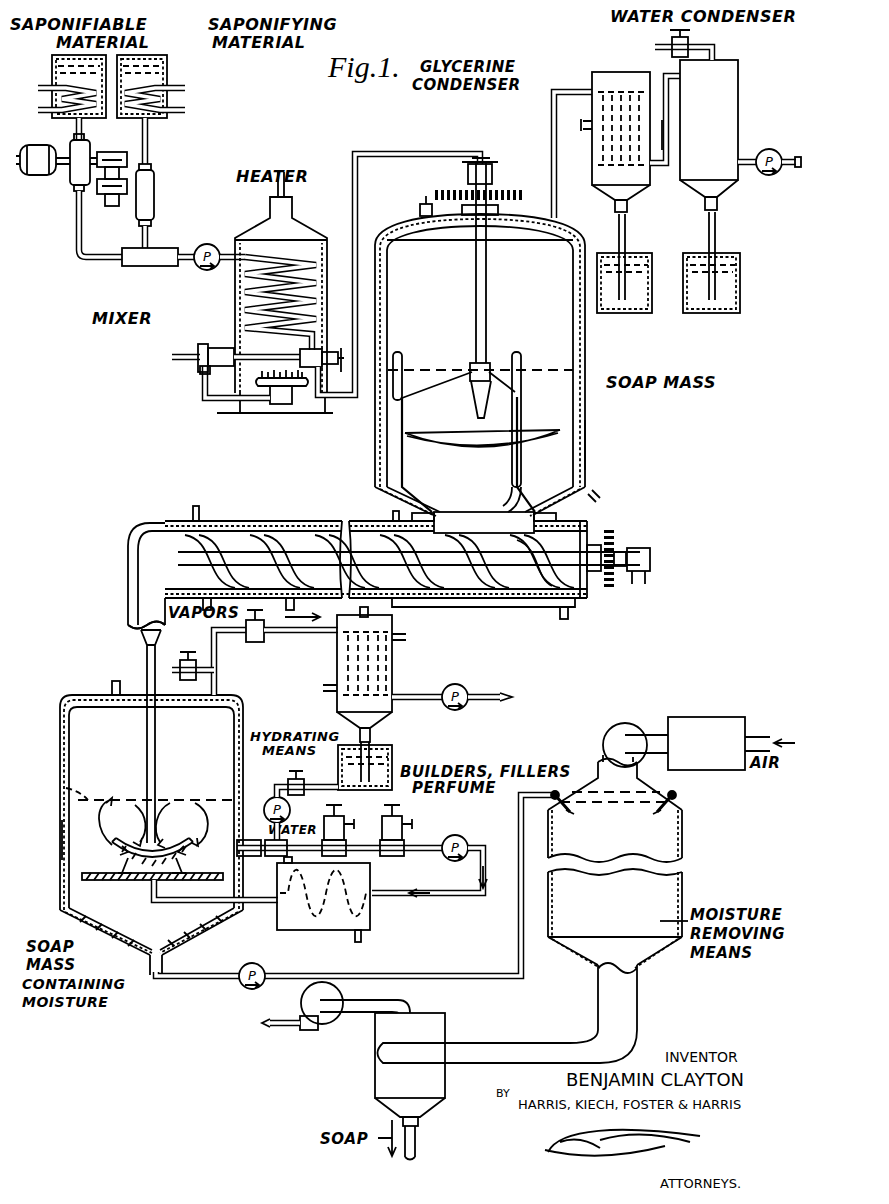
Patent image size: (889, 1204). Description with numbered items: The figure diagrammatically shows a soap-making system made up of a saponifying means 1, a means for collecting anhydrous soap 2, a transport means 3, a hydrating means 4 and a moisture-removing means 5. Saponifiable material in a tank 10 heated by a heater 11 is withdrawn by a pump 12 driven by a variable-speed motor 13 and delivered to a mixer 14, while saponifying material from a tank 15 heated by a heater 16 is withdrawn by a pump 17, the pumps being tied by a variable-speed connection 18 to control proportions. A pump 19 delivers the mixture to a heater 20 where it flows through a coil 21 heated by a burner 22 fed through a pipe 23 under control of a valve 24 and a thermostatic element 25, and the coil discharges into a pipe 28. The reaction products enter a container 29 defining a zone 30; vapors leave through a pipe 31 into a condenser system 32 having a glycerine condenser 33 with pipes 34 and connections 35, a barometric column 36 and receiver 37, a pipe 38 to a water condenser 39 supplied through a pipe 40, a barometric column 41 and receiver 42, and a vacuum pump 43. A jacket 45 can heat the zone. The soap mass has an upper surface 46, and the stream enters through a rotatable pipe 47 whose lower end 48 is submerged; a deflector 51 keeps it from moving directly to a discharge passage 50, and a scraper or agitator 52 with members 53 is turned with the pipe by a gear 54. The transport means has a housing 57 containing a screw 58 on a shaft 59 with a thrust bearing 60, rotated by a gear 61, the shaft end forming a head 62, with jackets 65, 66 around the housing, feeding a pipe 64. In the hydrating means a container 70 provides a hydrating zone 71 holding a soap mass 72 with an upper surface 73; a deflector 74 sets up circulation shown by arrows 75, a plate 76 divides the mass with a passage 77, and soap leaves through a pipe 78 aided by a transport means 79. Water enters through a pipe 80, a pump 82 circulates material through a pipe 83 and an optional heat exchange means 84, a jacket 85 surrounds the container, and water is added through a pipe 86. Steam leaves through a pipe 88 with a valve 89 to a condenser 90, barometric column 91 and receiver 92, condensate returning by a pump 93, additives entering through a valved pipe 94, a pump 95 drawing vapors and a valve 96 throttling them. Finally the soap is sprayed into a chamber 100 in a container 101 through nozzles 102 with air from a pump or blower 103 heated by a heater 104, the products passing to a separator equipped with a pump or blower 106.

The saponifying means 1 is at (228, 175).
The means for collecting anhydrous soap 2 is at (352, 452).
The transport means 3 is at (256, 503).
The hydrating means 4 is at (81, 673).
The moisture-removing means 5 is at (578, 766).
The tank 10 is at (62, 55).
The heater 11 is at (62, 86).
The pump 12 is at (78, 176).
The variable-speed motor 13 is at (36, 150).
The mixer 14 is at (134, 318).
The tank 15 is at (160, 57).
The heater 16 is at (150, 90).
The pump 17 is at (150, 180).
The variable-speed connection 18 is at (112, 206).
The pump 19 is at (208, 244).
The heater 20 is at (258, 222).
The coil 21 is at (240, 291).
The burner 22 is at (282, 406).
The pipe 23 is at (178, 356).
The valve 24 is at (200, 366).
The thermostatic element 25 is at (258, 354).
The pipe 28 is at (350, 180).
The container 29 is at (574, 406).
The zone 30 is at (587, 342).
The pipe 31 is at (552, 112).
The condenser system 32 is at (622, 54).
The glycerine condenser 33 is at (590, 76).
The pipes 34 is at (584, 120).
The connections 35 is at (670, 103).
The barometric column 36 is at (628, 212).
The receiver 37 is at (650, 316).
The pipe 38 is at (670, 134).
The water condenser 39 is at (740, 103).
The pipe 40 is at (700, 45).
The barometric column 41 is at (718, 208).
The receiver 42 is at (742, 275).
The vacuum pump 43 is at (768, 149).
The jacket 45 is at (588, 447).
The upper surface 46 is at (573, 370).
The rotatable pipe 47 is at (488, 283).
The lower end 48 is at (476, 415).
The discharge passage 50 is at (482, 522).
The deflector 51 is at (470, 454).
The scraper or agitator 52 is at (400, 468).
The members 53 is at (402, 362).
The gear 54 is at (446, 192).
The housing 57 is at (497, 608).
The screw 58 is at (532, 606).
The shaft 59 is at (594, 598).
The thrust bearing 60 is at (651, 560).
The gear 61 is at (616, 532).
The head 62 is at (182, 552).
The pipe 64 is at (145, 665).
The jacket 65 is at (446, 608).
The jacket 66 is at (291, 520).
The container 70 is at (62, 759).
The hydrating zone 71 is at (78, 733).
The soap mass containing moisture 72 is at (84, 838).
The upper surface 73 is at (62, 788).
The deflector 74 is at (190, 852).
The arrows 75 is at (112, 798).
The plate 76 is at (200, 905).
The passage 77 is at (94, 880).
The pipe 78 is at (190, 982).
The transport means 79 is at (249, 990).
The pipe 80 is at (261, 906).
The pump 82 is at (464, 840).
The pipe 83 is at (262, 857).
The heat exchange means 84 is at (384, 930).
The jacket 85 is at (246, 727).
The pipe 86 is at (324, 822).
The pipe 88 is at (303, 636).
The valve 89 is at (255, 643).
The condenser 90 is at (404, 670).
The barometric column 91 is at (372, 731).
The receiver 92 is at (394, 765).
The pump 93 is at (272, 796).
The valved pipe 94 is at (377, 800).
The pump 95 is at (470, 688).
The valve 96 is at (187, 659).
The chamber 100 is at (684, 853).
The container 101 is at (684, 897).
The nozzles 102 is at (573, 812).
The pump or blower 103 is at (628, 730).
The heater 104 is at (726, 716).
The pump or blower 106 is at (321, 1026).